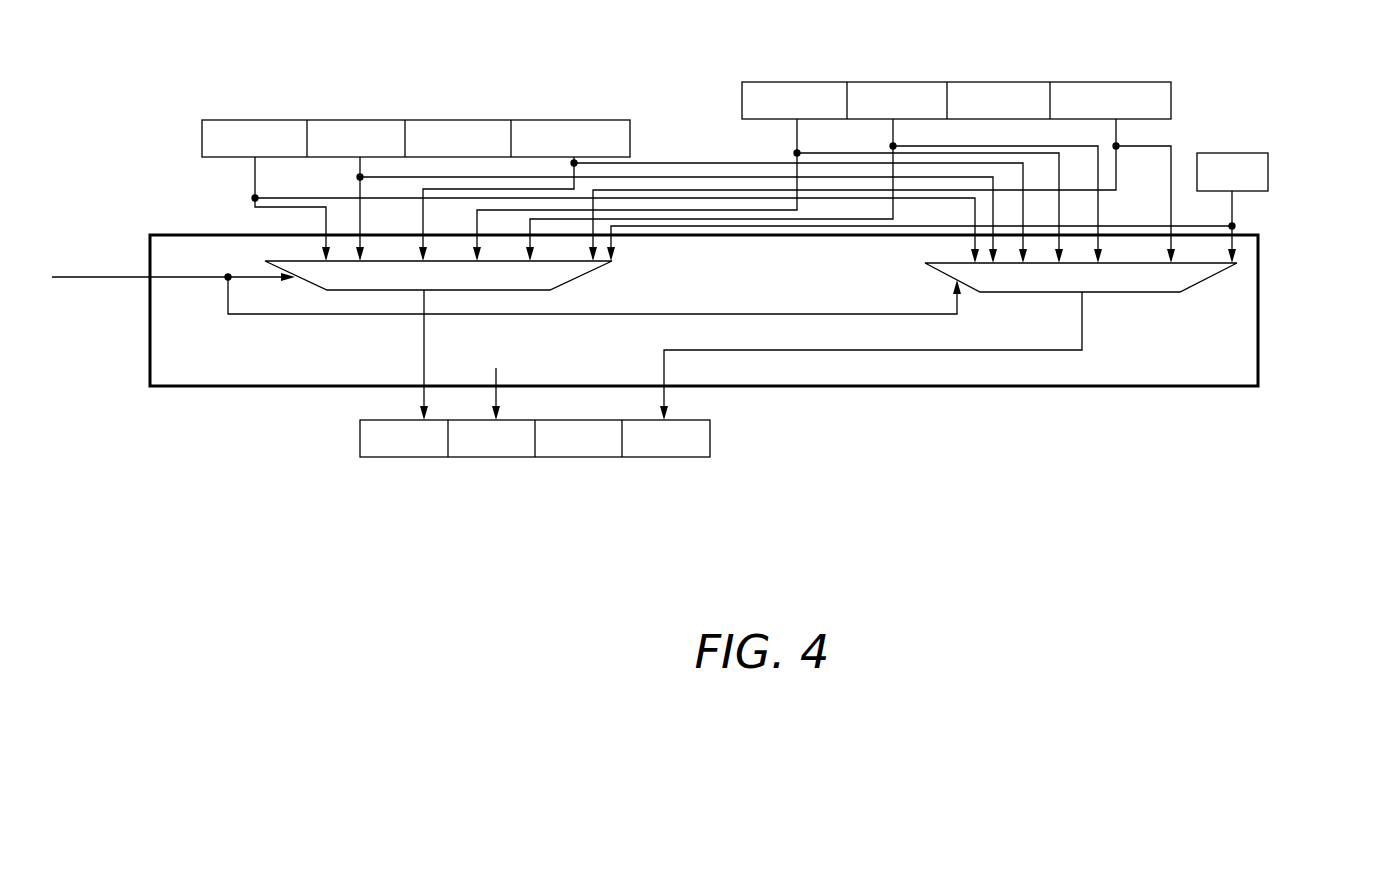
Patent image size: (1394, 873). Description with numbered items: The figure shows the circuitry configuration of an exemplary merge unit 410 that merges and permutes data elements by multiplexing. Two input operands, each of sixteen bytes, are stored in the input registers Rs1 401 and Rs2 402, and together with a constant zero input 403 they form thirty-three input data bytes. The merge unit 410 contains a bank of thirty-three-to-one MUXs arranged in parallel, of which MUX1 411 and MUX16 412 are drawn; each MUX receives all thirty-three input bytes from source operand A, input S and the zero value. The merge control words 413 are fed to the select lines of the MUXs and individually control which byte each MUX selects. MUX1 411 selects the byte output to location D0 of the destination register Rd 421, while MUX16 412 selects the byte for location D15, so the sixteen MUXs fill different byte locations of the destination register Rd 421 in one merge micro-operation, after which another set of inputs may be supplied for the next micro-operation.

The input register Rs1 401 is at (202, 122).
The input register Rs2 402 is at (757, 82).
The zero input data byte 403 is at (1268, 172).
The merge unit 410 is at (1158, 373).
The MUX1 411 is at (575, 278).
The MUX16 412 is at (1217, 276).
The merge control words 413 is at (85, 354).
The destination register Rd 421 is at (360, 440).